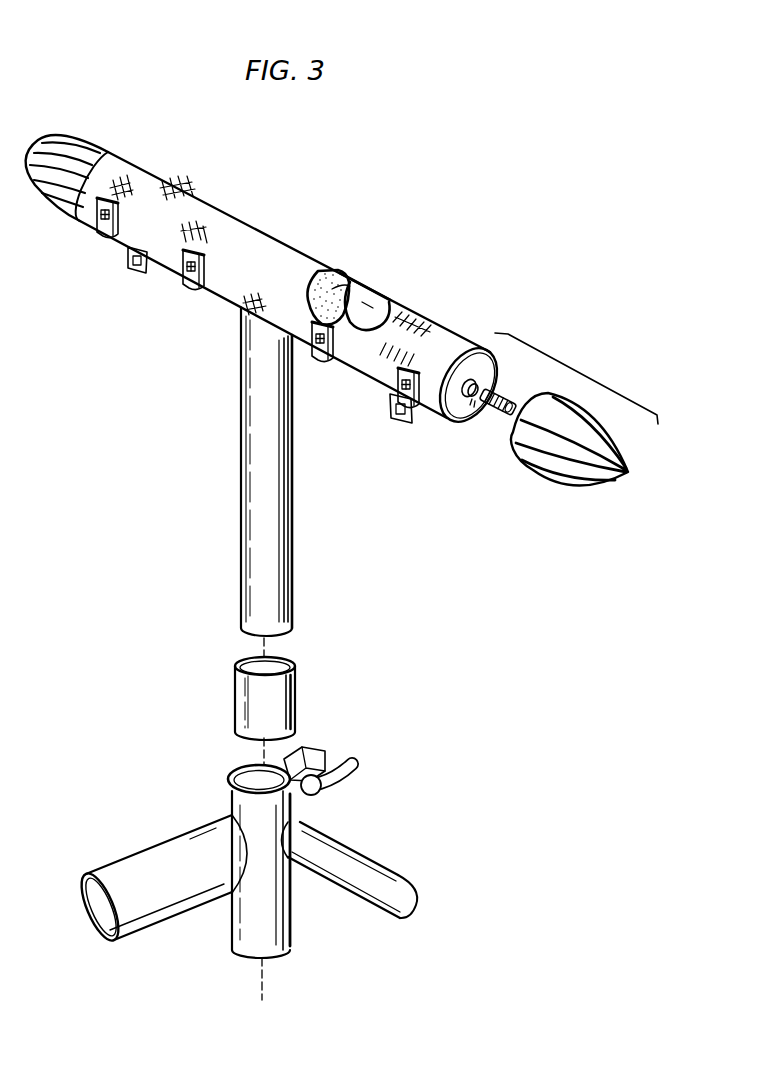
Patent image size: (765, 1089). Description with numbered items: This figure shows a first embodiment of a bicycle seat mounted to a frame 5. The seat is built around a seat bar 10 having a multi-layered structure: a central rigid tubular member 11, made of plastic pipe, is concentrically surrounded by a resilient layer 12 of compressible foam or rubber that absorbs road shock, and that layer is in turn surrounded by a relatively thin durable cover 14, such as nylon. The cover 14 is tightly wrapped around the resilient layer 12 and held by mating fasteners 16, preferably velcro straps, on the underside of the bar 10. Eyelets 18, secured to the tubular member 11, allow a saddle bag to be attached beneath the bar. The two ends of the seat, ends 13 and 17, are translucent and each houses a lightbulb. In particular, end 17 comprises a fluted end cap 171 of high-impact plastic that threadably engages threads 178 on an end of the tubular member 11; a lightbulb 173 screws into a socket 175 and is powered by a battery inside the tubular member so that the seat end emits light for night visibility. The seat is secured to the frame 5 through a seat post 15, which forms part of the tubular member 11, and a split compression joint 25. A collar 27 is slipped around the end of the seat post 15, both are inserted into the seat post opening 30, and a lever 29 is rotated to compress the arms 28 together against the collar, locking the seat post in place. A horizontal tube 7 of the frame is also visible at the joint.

The frame 5 is at (169, 826).
The horizontal tube of tee fitting 7 is at (151, 918).
The seat bar 10 is at (278, 235).
The tubular member 11 is at (376, 307).
The resilient layer 12 is at (356, 284).
The end 13 is at (66, 133).
The cover 14 is at (324, 266).
The seat post 15 is at (287, 533).
The fasteners 16 is at (110, 240).
The end 17 is at (580, 367).
The eyelets 18 is at (144, 276).
The split compression joint 25 is at (347, 747).
The collar 27 is at (292, 702).
The arms 28 is at (313, 750).
The lever 29 is at (363, 773).
The seat post opening 30 is at (238, 768).
The fluted end cap 171 is at (557, 480).
The lightbulb 173 is at (503, 416).
The socket 175 is at (484, 389).
The threads 178 is at (478, 346).